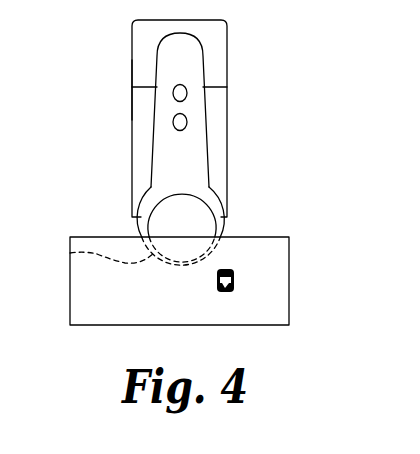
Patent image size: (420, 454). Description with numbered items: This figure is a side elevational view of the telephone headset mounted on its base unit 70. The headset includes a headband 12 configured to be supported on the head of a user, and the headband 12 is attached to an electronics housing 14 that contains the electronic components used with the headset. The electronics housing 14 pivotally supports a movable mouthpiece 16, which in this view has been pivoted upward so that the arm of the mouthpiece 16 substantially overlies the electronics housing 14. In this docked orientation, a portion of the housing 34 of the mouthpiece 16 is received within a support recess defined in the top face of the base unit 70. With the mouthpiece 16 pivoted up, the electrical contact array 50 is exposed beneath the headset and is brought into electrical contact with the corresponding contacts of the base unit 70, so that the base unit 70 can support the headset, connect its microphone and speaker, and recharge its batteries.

The headband 12 is at (222, 57).
The electronics housing 14 is at (132, 113).
The mouthpiece 16 is at (157, 148).
The housing of the mouthpiece 34 is at (141, 225).
The electrical contact array 50 is at (70, 253).
The base unit 70 is at (258, 250).